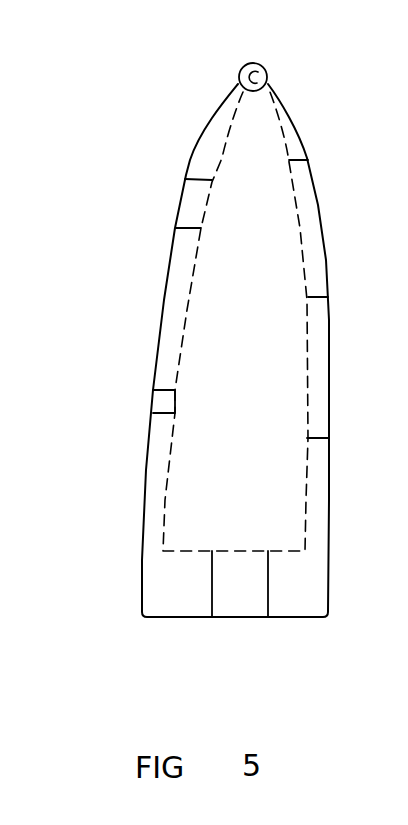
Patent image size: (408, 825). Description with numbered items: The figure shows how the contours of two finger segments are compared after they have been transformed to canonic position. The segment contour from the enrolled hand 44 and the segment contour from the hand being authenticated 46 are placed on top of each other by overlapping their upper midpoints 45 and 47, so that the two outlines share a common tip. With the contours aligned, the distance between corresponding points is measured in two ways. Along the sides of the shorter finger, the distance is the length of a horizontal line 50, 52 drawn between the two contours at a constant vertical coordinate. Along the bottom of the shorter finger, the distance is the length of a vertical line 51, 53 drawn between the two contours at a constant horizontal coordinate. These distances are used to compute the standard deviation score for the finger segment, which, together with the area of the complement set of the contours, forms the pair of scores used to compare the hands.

The segment contour of the enrolled hand 44 is at (145, 472).
The upper midpoint 45 is at (241, 68).
The segment contour of the hand being authenticated 46 is at (152, 412).
The upper midpoint 47 is at (257, 77).
The horizontal line 50 is at (186, 168).
The vertical line 51 is at (212, 600).
The horizontal line 52 is at (171, 250).
The vertical line 53 is at (268, 598).